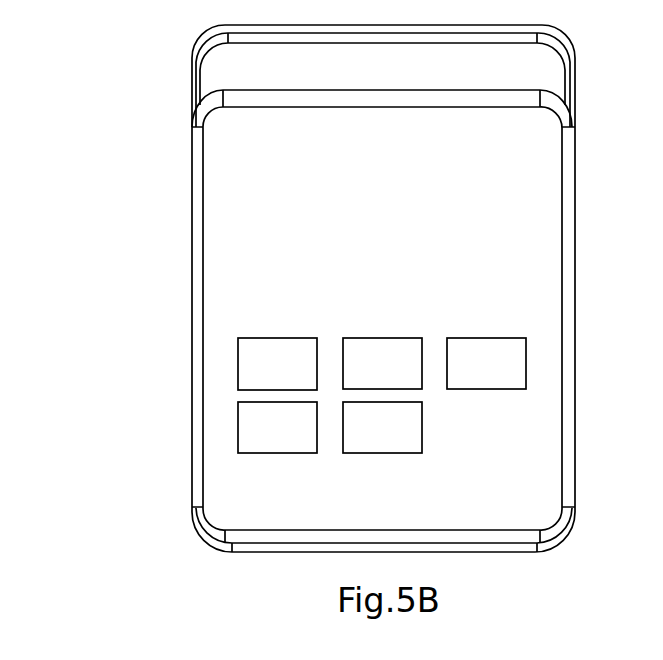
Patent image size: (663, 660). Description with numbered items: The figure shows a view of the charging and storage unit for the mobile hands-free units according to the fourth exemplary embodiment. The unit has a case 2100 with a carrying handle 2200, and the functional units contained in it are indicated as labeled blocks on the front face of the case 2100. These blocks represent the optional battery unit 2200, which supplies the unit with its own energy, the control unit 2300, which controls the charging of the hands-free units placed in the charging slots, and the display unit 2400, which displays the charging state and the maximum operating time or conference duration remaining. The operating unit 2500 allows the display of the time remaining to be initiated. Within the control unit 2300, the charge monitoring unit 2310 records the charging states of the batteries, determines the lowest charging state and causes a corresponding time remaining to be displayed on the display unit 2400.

The case 2100 is at (383, 321).
The carrying handle 2200 is at (196, 61).
The control unit 2300 is at (382, 363).
The charge monitoring unit 2310 is at (382, 427).
The display unit 2400 is at (486, 363).
The operating unit 2500 is at (277, 427).